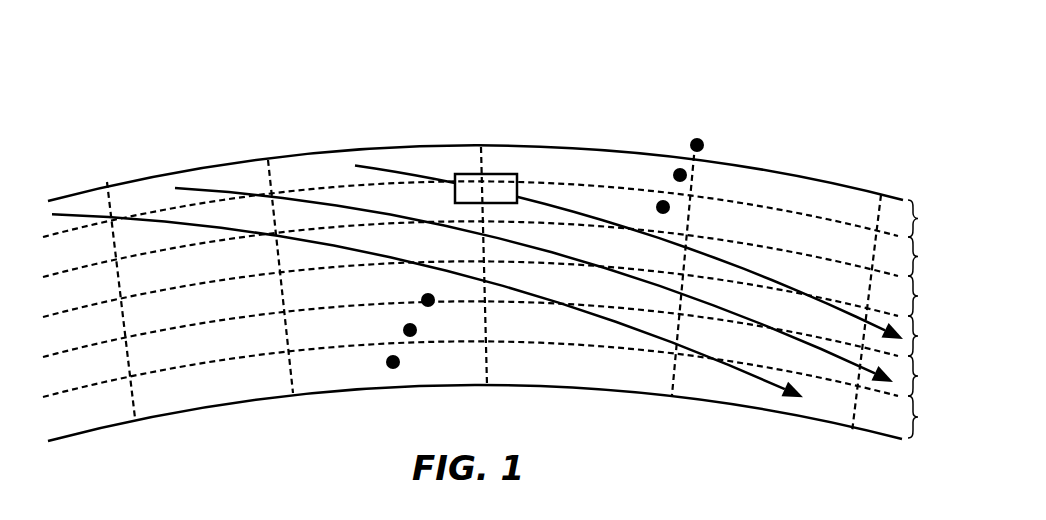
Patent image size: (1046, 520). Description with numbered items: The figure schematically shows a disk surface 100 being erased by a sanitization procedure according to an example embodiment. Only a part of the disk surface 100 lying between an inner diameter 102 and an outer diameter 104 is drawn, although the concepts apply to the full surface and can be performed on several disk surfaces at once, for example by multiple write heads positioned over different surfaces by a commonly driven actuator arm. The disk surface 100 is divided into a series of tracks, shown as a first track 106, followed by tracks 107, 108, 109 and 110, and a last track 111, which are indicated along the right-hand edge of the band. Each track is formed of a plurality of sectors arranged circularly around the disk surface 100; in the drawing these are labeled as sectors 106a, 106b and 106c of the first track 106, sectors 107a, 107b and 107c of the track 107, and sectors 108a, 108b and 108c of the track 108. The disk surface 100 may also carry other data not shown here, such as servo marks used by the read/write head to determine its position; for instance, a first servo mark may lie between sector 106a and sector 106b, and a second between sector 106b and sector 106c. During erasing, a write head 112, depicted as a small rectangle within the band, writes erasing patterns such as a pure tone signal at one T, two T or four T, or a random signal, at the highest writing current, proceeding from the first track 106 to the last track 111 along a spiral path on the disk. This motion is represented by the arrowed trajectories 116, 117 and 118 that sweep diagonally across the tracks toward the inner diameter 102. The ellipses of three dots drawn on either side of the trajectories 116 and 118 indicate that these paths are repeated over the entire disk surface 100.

The disk surface 100 is at (455, 68).
The inner diameter 102 is at (445, 386).
The outer diameter 104 is at (780, 173).
The first track 106 is at (505, 209).
The track 107 is at (505, 249).
The track 108 is at (505, 289).
The track 109 is at (505, 329).
The track 110 is at (505, 369).
The last track 111 is at (937, 417).
The sector 106a is at (72, 202).
The sector 106b is at (207, 178).
The sector 106c is at (317, 162).
The sector 107a is at (160, 237).
The sector 107b is at (398, 202).
The sector 107c is at (610, 208).
The sector 108a is at (330, 300).
The sector 108b is at (533, 270).
The sector 108c is at (832, 287).
The write head 112 is at (505, 175).
The trajectory 116 is at (617, 328).
The trajectory 117 is at (673, 284).
The trajectory 118 is at (727, 266).